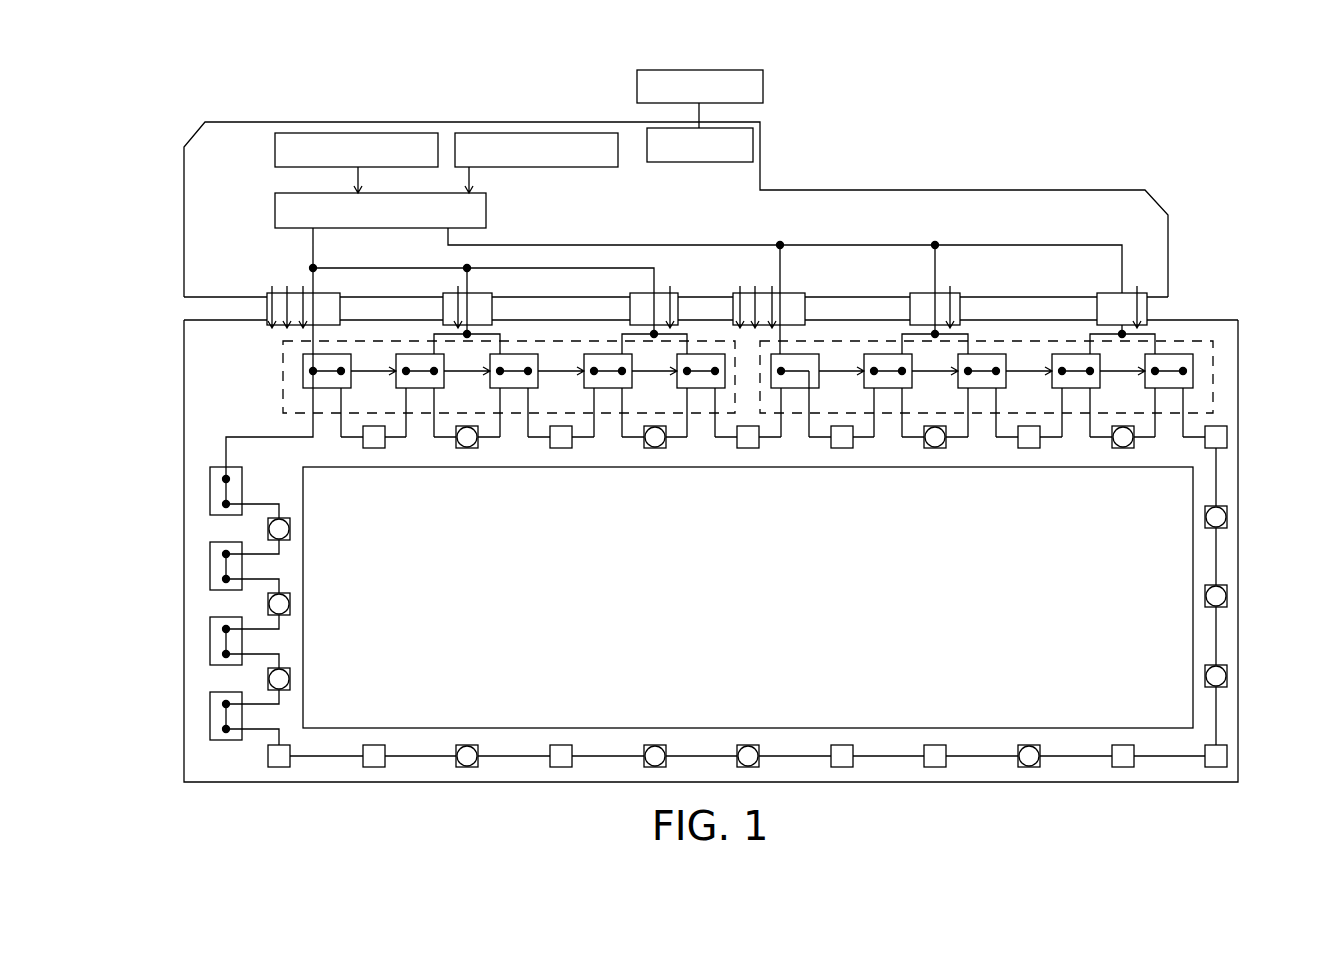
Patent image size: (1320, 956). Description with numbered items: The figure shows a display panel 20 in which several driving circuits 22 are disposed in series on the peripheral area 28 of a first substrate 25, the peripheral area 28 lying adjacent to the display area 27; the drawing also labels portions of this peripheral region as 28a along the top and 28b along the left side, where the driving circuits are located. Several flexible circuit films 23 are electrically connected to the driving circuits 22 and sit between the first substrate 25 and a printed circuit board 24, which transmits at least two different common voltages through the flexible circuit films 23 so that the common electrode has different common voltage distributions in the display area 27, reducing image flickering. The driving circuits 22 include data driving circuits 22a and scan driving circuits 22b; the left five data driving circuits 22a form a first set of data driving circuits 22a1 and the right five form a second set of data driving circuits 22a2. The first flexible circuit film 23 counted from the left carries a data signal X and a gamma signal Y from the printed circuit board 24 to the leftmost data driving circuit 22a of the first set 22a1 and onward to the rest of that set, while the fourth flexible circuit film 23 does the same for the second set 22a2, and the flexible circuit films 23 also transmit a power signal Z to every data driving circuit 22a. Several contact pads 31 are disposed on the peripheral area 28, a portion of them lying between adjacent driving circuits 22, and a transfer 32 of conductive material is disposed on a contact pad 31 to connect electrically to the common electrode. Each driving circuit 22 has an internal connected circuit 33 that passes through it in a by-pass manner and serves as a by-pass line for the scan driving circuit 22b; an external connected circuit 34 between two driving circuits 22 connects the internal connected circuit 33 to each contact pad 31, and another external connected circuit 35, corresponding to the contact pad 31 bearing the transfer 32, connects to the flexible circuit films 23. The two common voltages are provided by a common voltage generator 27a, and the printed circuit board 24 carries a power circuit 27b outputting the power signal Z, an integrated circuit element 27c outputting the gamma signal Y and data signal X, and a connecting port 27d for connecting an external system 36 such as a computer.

The display panel 20 is at (163, 91).
The driving circuits 22 is at (712, 506).
The data driving circuits 22a is at (303, 362).
The first set of data driving circuits 22a1 is at (283, 406).
The second set of data driving circuits 22a2 is at (1213, 369).
The scan driving circuits 22b is at (210, 488).
The flexible circuit films 23 is at (267, 305).
The printed circuit board 24 is at (1157, 201).
The first substrate 25 is at (1238, 548).
The display area 27 is at (1072, 702).
The common voltage generator 27a is at (358, 225).
The power circuit 27b is at (335, 164).
The integrated circuit element 27c is at (515, 164).
The connecting port 27d is at (678, 158).
The peripheral area 28 is at (826, 493).
The upper wiring region 28a is at (1028, 330).
The side wiring region 28b is at (210, 603).
The contact pads 31 is at (456, 448).
The transfer 32 is at (466, 441).
The internal connected circuit 33 is at (427, 384).
The external connected circuit 34 is at (502, 424).
The external connected circuit 35 is at (528, 384).
The external system 36 is at (683, 100).